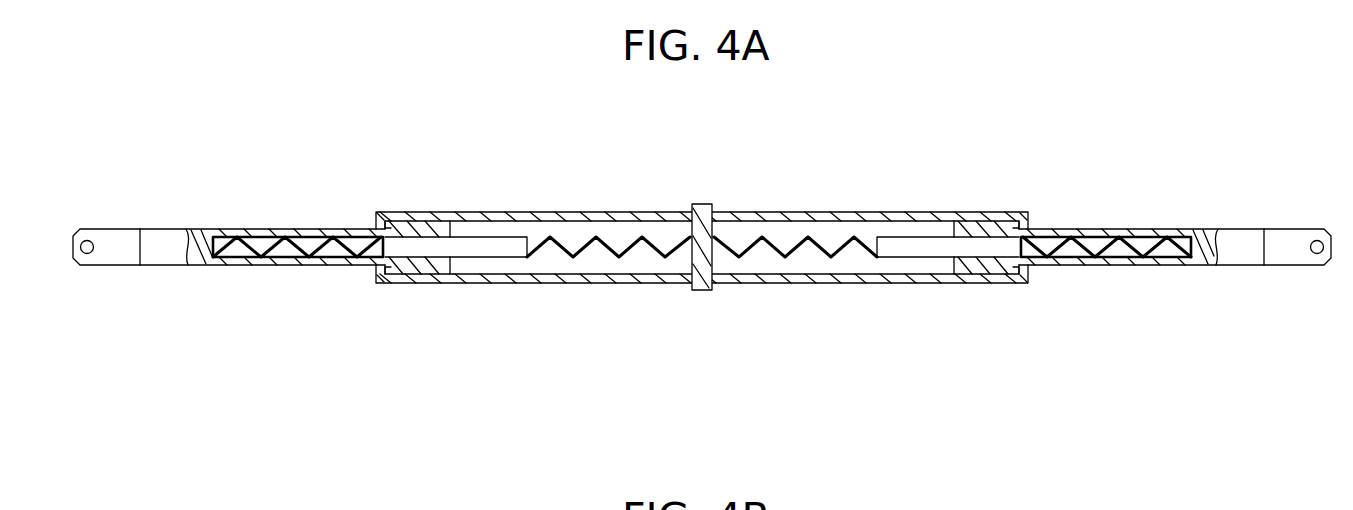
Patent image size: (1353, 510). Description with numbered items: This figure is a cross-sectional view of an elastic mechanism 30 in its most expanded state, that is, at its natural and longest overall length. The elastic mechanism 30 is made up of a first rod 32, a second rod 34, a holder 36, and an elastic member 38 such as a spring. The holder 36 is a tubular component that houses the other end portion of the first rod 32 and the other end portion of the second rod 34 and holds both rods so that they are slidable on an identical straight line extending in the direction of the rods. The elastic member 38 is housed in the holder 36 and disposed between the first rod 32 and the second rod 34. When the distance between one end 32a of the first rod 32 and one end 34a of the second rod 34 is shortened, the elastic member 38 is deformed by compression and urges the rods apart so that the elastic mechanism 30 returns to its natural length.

The elastic mechanism 30 is at (863, 170).
The first rod 32 is at (222, 229).
The one end of first rod 32a is at (106, 229).
The second rod 34 is at (1169, 229).
The one end of second rod 34a is at (1298, 229).
The holder 36 is at (666, 212).
The elastic member 38 is at (293, 237).